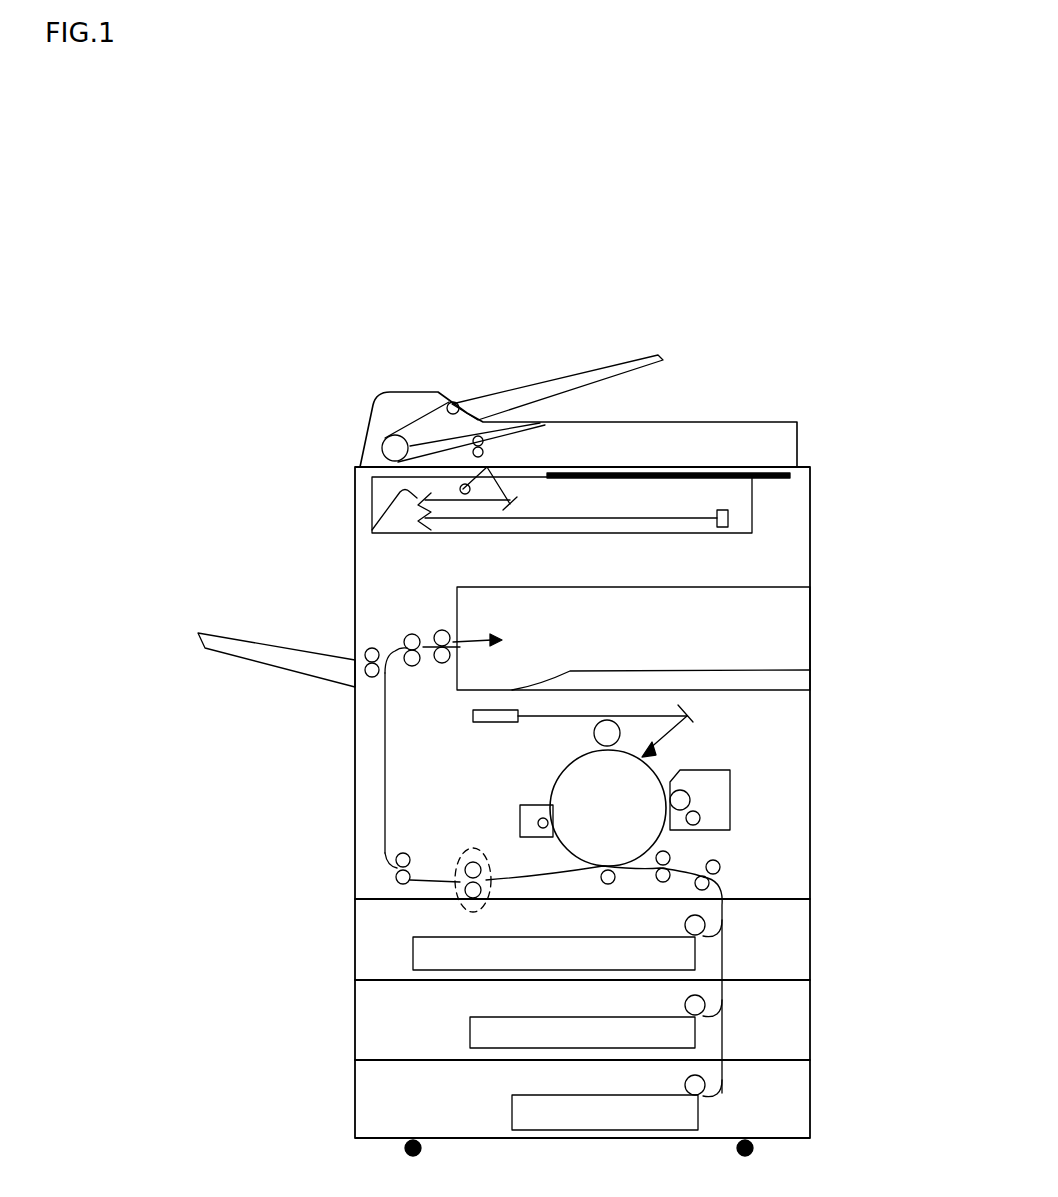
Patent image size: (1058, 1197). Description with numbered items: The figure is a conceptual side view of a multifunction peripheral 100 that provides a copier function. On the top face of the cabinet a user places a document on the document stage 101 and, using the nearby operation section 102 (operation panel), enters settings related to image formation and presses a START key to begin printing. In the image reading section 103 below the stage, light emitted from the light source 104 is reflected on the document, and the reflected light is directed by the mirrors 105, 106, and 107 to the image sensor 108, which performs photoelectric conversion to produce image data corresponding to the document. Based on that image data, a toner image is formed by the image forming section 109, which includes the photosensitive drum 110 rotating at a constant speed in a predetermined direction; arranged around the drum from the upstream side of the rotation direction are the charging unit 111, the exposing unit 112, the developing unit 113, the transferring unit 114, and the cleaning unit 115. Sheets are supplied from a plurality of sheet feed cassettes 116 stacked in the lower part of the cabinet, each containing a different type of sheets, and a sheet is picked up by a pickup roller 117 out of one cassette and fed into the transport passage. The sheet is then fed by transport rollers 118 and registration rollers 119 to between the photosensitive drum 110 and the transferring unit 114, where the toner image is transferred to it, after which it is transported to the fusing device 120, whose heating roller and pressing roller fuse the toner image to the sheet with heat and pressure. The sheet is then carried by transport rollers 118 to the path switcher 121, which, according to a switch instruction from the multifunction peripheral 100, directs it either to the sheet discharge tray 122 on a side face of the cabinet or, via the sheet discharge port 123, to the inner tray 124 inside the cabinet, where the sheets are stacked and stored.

The multifunction peripheral 100 is at (582, 348).
The document stage 101 is at (672, 467).
The operation section 102 is at (760, 472).
The image reading section 103 is at (340, 537).
The light source 104 is at (472, 488).
The mirror 105 is at (513, 503).
The mirror 106 is at (372, 530).
The mirror 107 is at (423, 527).
The image sensor 108 is at (727, 510).
The image forming section 109 is at (343, 882).
The photosensitive drum 110 is at (575, 783).
The charging unit 111 is at (592, 731).
The exposing unit 112 is at (473, 718).
The developing unit 113 is at (732, 830).
The transferring unit 114 is at (603, 884).
The cleaning unit 115 is at (496, 816).
The sheet feed cassette 116 is at (418, 962).
The pickup roller 117 is at (695, 925).
The transport rollers 118 is at (718, 864).
The registration rollers 119 is at (660, 882).
The fusing device 120 is at (453, 887).
The path switcher 121 is at (383, 673).
The sheet discharge tray 122 is at (208, 638).
The sheet discharge port 123 is at (460, 628).
The inner tray 124 is at (570, 672).